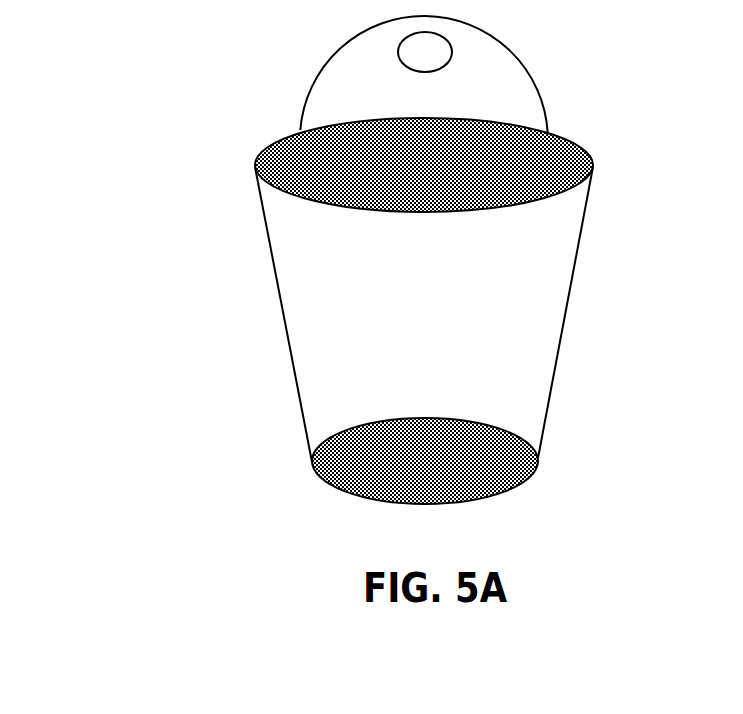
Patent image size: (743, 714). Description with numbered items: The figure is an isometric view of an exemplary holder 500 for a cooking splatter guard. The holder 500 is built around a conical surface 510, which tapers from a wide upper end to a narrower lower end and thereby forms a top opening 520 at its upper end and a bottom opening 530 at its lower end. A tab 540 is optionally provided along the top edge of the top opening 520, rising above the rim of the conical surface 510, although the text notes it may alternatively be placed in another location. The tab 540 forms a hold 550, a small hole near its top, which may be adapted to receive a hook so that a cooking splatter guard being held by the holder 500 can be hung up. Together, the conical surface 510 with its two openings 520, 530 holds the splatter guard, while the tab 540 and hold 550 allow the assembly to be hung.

The holder 500 is at (178, 128).
The conical surface 510 is at (525, 288).
The top opening 520 is at (527, 157).
The bottom opening 530 is at (462, 465).
The tab 540 is at (480, 82).
The hold 550 is at (425, 52).